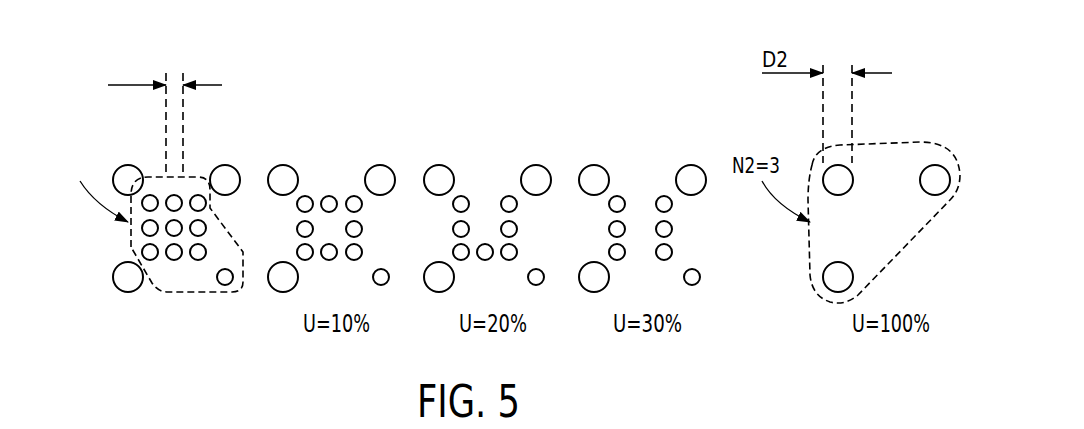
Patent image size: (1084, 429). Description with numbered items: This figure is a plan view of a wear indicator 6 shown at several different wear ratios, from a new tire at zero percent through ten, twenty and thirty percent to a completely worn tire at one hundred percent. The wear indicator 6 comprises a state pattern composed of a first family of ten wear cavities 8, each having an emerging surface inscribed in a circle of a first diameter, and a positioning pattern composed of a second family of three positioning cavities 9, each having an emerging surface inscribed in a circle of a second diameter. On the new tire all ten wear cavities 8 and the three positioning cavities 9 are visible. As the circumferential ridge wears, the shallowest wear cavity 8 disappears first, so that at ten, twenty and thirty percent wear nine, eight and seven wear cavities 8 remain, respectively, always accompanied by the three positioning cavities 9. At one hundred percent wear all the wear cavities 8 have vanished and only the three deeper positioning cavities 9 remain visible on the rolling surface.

The wear indicator 6 is at (142, 187).
The wear cavities 8 is at (200, 197).
The positioning cavities 9 is at (936, 176).